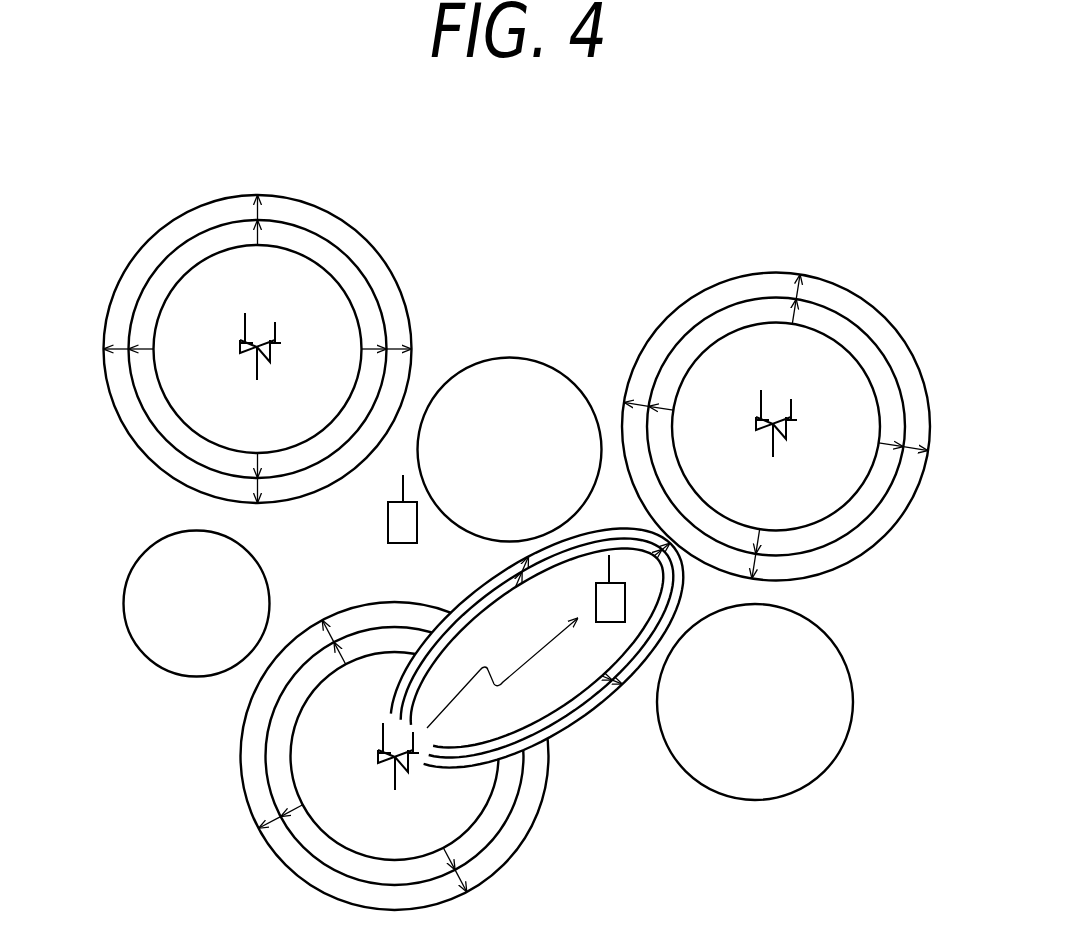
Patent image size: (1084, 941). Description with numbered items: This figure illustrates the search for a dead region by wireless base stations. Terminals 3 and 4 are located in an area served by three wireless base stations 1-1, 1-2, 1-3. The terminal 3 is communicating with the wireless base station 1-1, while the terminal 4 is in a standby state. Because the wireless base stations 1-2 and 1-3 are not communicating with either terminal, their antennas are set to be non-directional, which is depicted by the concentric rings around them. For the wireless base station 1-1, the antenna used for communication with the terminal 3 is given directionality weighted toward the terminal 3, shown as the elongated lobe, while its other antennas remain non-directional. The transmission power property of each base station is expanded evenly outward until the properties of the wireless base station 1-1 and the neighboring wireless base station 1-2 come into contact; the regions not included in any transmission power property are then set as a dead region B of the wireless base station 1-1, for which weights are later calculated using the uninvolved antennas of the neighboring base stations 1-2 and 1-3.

The wireless base station 1-1 is at (377, 753).
The wireless base station 1-2 is at (760, 398).
The wireless base station 1-3 is at (283, 337).
The terminal 3 is at (613, 610).
The terminal 4 is at (397, 527).
The dead region B is at (527, 390).